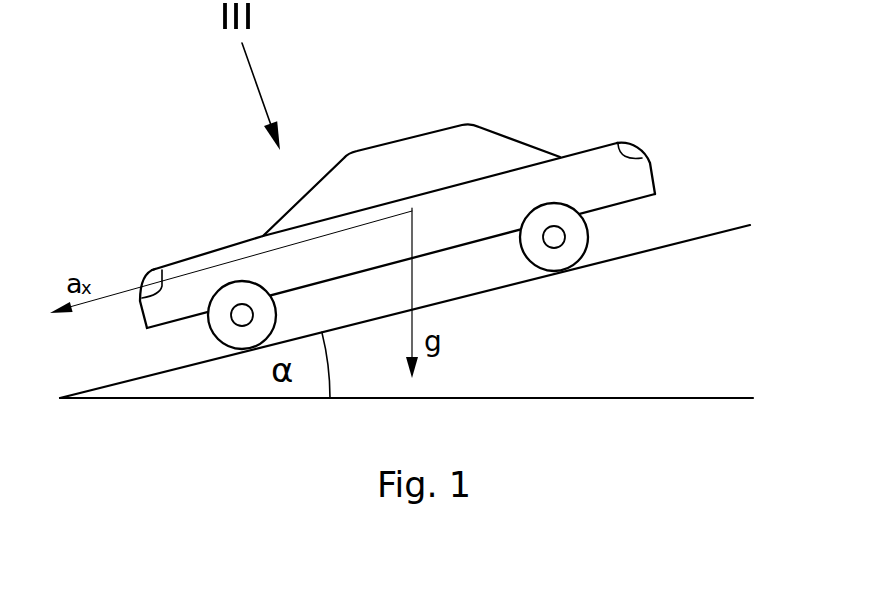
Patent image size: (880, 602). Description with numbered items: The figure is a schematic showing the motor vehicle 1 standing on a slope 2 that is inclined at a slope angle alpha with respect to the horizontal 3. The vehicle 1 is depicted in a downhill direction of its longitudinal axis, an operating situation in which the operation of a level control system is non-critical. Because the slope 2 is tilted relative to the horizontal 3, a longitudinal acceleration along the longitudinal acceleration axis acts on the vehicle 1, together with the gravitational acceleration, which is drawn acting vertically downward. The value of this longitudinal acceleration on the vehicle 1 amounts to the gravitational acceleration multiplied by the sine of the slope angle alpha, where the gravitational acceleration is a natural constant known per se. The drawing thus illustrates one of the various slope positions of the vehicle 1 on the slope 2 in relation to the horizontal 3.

The vehicle 1 is at (580, 152).
The slope 2 is at (713, 232).
The horizontal 3 is at (657, 398).